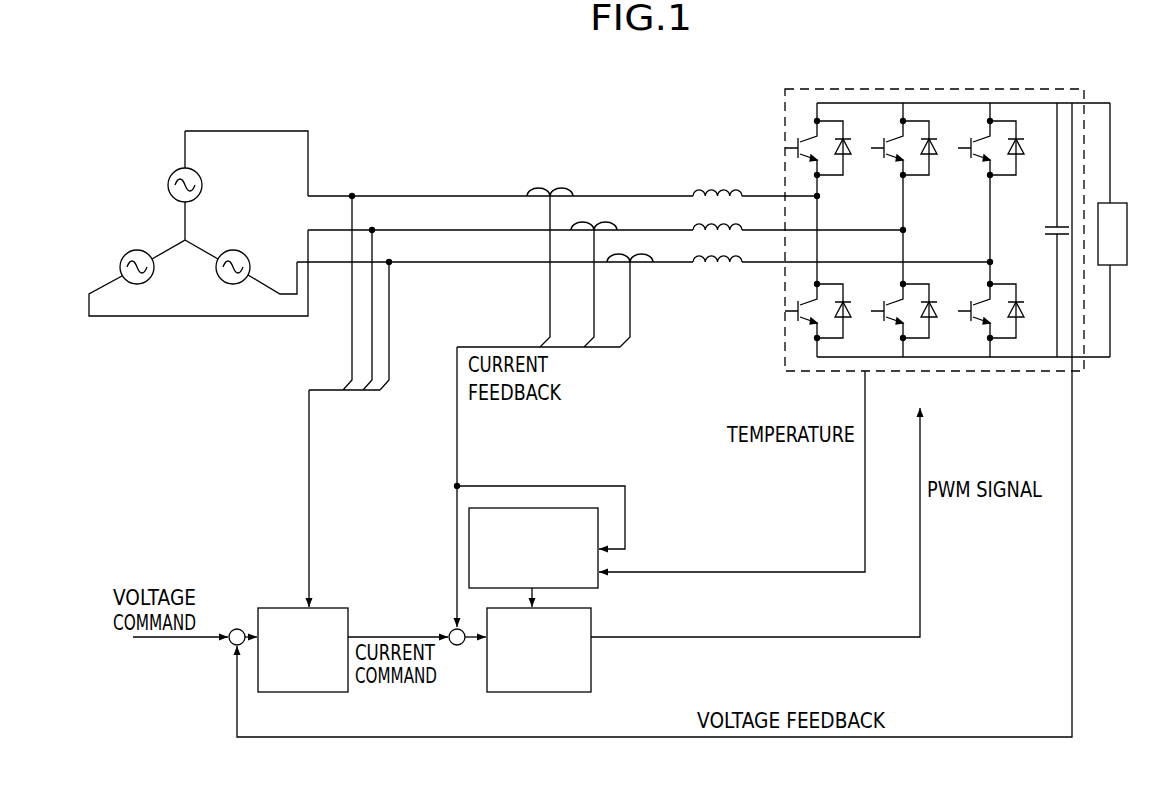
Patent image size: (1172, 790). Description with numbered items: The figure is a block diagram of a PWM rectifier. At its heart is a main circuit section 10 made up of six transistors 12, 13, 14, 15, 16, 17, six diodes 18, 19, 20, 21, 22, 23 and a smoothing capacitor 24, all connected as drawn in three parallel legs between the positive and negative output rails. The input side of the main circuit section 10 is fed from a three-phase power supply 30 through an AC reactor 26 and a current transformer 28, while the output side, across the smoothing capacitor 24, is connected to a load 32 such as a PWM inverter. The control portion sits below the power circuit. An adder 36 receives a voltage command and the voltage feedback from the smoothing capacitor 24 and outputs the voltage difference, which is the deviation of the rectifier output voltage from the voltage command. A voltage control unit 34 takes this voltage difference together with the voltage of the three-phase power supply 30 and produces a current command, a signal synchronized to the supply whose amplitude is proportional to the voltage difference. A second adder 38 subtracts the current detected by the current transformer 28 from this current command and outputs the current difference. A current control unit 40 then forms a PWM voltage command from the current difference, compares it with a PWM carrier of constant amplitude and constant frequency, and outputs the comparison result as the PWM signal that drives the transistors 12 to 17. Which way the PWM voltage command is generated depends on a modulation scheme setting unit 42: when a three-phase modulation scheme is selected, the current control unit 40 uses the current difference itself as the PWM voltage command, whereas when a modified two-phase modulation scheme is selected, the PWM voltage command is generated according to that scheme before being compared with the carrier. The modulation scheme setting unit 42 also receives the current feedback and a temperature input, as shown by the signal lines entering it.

The main circuit section 10 is at (838, 87).
The transistor 12 is at (791, 139).
The transistor 13 is at (789, 320).
The transistor 14 is at (880, 157).
The transistor 15 is at (877, 321).
The transistor 16 is at (961, 159).
The transistor 17 is at (962, 321).
The diode 18 is at (848, 148).
The diode 19 is at (848, 311).
The diode 20 is at (937, 150).
The diode 21 is at (937, 312).
The diode 22 is at (1026, 150).
The diode 23 is at (1026, 313).
The smoothing capacitor 24 is at (1053, 226).
The AC reactor 26 is at (716, 184).
The current transformer 28 is at (580, 170).
The three-phase power supply 30 is at (184, 117).
The load 32 is at (1125, 203).
The voltage control unit 34 is at (305, 692).
The adder 36 is at (241, 629).
The adder 38 is at (457, 646).
The current control unit 40 is at (540, 692).
The modulation scheme setting unit 42 is at (598, 588).